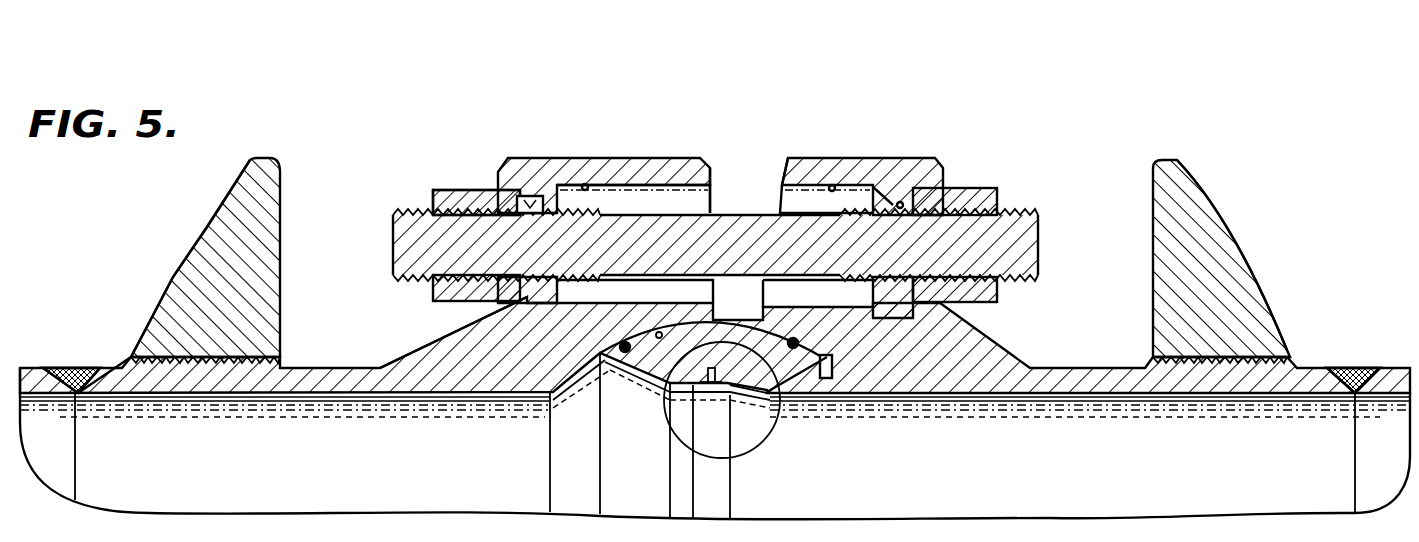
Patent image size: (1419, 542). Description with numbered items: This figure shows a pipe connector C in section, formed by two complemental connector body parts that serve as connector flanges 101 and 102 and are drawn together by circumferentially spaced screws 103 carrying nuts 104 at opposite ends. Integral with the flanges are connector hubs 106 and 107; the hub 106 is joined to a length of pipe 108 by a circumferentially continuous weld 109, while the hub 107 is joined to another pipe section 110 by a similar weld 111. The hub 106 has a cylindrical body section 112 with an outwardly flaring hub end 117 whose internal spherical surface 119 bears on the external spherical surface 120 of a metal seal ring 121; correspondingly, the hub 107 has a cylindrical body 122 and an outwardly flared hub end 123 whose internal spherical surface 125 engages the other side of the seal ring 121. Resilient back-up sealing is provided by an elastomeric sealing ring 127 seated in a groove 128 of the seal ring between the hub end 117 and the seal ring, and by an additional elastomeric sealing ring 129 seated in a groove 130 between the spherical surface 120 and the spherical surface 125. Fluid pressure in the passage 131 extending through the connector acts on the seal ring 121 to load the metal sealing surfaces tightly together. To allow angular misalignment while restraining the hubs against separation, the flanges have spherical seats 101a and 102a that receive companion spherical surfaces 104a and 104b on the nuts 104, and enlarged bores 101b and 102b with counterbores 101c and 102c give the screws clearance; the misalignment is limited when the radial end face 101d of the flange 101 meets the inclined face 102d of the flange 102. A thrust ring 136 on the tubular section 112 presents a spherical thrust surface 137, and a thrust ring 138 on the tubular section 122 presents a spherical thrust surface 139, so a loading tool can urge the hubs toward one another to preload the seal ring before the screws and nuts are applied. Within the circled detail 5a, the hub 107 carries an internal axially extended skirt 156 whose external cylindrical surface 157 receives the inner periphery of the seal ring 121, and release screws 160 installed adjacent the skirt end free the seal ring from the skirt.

The detail circle 5a is at (722, 400).
The connector flange 101 is at (645, 157).
The spherical seat 101a is at (460, 287).
The enlarged bore 101b is at (530, 200).
The counterbore 101c is at (585, 185).
The radial end face 101d is at (712, 165).
The connector flange 102 is at (895, 157).
The spherical seat 102a is at (953, 290).
The enlarged bore 102b is at (902, 203).
The counterbore 102c is at (833, 186).
The inclined face 102d is at (775, 178).
The screw 103 is at (715, 245).
The nut 104 is at (452, 200).
The spherical surface 104a is at (520, 200).
The spherical surface 104b is at (930, 302).
The connector hub 106 is at (508, 390).
The connector hub 107 is at (872, 393).
The pipe 108 is at (30, 380).
The weld 109 is at (87, 372).
The pipe 110 is at (1393, 373).
The weld 111 is at (1355, 378).
The cylindrical body section 112 is at (323, 385).
The hub end 117 is at (645, 315).
The internal spherical surface 119 is at (659, 332).
The external spherical surface 120 is at (660, 340).
The metal seal ring 121 is at (625, 372).
The cylindrical body 122 is at (1100, 385).
The hub end 123 is at (788, 300).
The internal spherical surface 125 is at (738, 300).
The elastomeric sealing ring 127 is at (618, 348).
The groove 128 is at (578, 380).
The elastomeric sealing ring 129 is at (797, 343).
The groove 130 is at (800, 365).
The passage 131 is at (715, 436).
The thrust ring 136 is at (205, 260).
The thrust surface 137 is at (183, 250).
The thrust ring 138 is at (1221, 261).
The thrust surface 139 is at (1225, 200).
The skirt 156 is at (788, 352).
The external cylindrical surface 157 is at (835, 368).
The screw 160 is at (710, 384).
The pipe connector C is at (1012, 165).